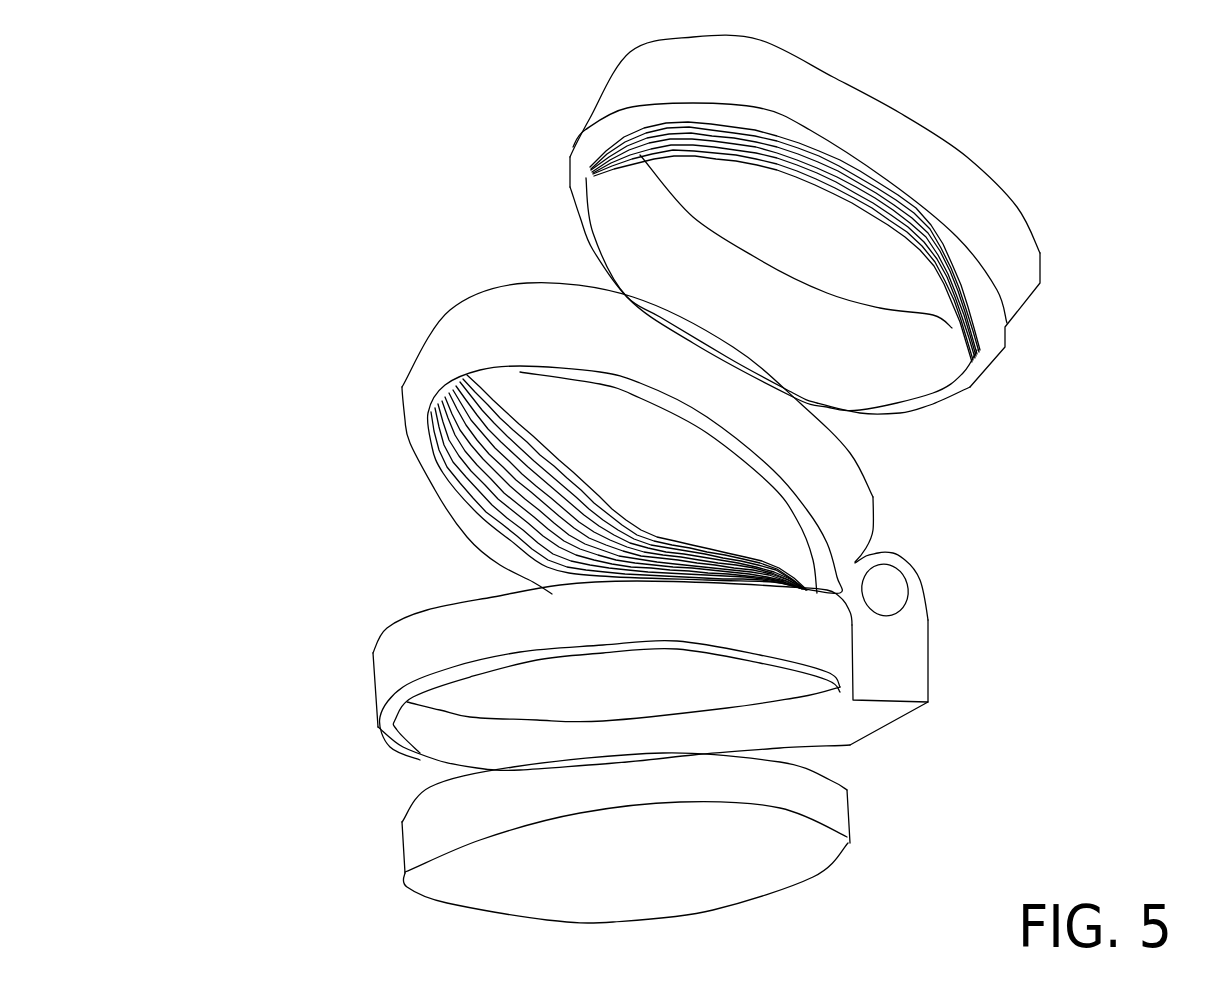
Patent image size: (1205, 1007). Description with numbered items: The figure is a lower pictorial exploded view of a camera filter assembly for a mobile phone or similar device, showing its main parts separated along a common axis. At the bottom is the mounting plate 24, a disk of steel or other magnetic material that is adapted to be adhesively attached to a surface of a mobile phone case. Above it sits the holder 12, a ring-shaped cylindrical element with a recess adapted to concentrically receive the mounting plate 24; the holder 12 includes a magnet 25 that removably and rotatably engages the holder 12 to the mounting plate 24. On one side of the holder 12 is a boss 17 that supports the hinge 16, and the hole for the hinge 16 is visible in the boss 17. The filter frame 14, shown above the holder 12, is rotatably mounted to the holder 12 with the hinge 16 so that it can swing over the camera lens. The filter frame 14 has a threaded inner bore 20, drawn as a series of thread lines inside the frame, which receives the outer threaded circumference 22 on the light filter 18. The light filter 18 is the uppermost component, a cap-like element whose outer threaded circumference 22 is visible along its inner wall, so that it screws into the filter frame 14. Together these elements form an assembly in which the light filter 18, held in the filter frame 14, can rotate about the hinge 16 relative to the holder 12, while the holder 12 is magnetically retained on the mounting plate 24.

The holder 12 is at (413, 657).
The filter frame 14 is at (460, 330).
The hinge 16 is at (888, 588).
The boss 17 is at (900, 650).
The light filter 18 is at (632, 87).
The threaded inner bore 20 is at (500, 470).
The outer threaded circumference 22 is at (740, 150).
The mounting plate 24 is at (415, 833).
The magnet 25 is at (663, 678).